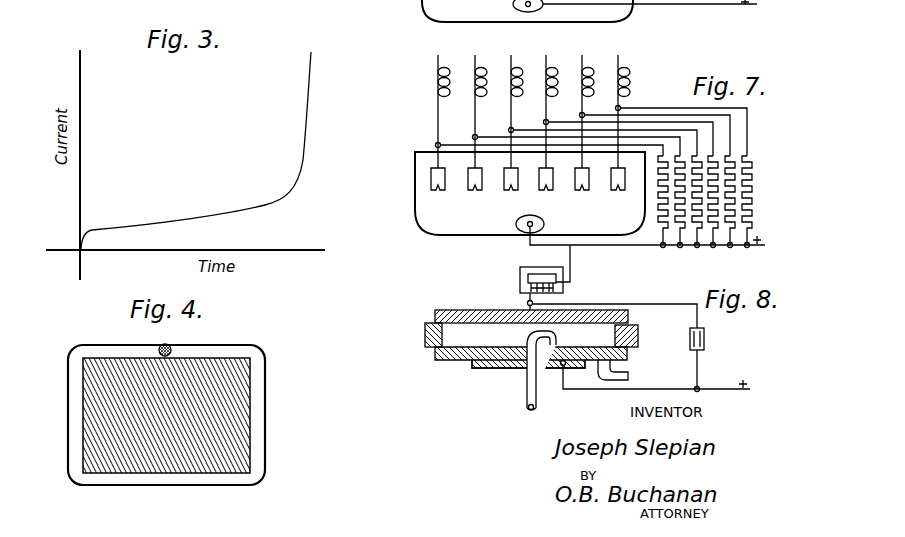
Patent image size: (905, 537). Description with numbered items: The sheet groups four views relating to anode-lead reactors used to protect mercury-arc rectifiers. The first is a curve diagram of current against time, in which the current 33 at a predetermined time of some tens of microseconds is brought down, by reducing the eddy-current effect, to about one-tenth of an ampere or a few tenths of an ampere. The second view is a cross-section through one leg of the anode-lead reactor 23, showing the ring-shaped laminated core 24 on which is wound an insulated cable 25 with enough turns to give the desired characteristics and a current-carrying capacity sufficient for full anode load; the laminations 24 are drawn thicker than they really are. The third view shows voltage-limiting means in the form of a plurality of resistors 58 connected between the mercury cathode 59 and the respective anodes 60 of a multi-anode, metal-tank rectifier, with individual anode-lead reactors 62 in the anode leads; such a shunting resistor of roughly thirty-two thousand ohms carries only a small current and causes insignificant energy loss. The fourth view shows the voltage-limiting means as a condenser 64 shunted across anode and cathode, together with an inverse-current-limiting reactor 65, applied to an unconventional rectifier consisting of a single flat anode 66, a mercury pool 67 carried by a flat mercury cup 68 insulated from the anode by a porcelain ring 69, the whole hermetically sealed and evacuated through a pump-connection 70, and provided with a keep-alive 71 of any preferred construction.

In FIG. 4, the anode-lead reactor 23 is at (298, 407).
In FIG. 4, the laminated core 24 is at (193, 362).
In FIG. 4, the insulated cable 25 is at (159, 346).
In FIG. 3, the current 33 is at (265, 204).
In FIG. 7, the resistors 58 is at (748, 166).
In FIG. 7, the mercury cathode 59 is at (522, 233).
In FIG. 7, the anodes 60 is at (431, 178).
In FIG. 7, the anode-lead reactors 62 is at (625, 86).
In FIG. 8, the condenser 64 is at (705, 343).
In FIG. 8, the inverse-current-limiting reactor 65 is at (518, 284).
In FIG. 8, the flat anode 66 is at (456, 311).
In FIG. 8, the mercury pool 67 is at (500, 356).
In FIG. 8, the flat mercury cup 68 is at (456, 352).
In FIG. 8, the porcelain ring 69 is at (424, 338).
In FIG. 8, the pump-connection 70 is at (629, 378).
In FIG. 8, the keep-alive 71 is at (553, 343).